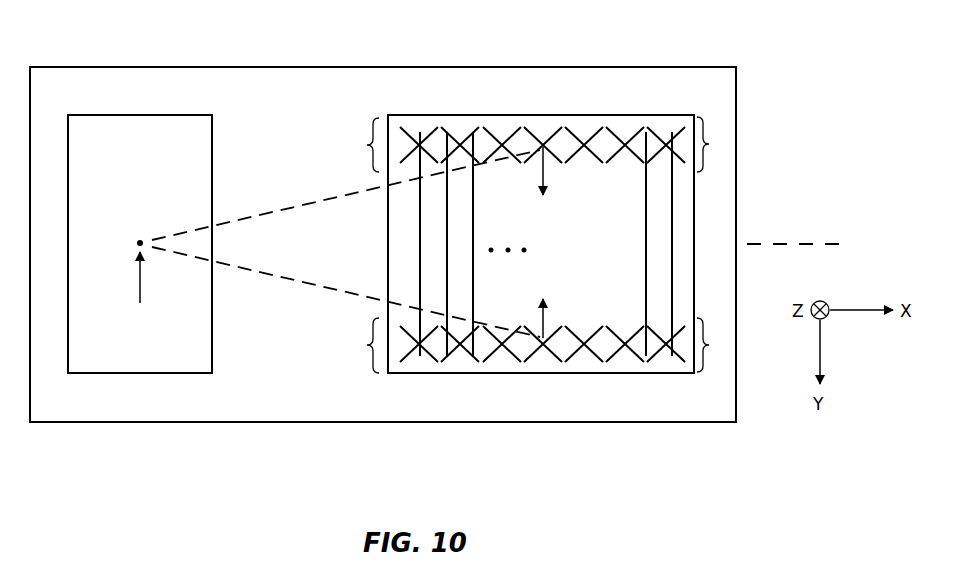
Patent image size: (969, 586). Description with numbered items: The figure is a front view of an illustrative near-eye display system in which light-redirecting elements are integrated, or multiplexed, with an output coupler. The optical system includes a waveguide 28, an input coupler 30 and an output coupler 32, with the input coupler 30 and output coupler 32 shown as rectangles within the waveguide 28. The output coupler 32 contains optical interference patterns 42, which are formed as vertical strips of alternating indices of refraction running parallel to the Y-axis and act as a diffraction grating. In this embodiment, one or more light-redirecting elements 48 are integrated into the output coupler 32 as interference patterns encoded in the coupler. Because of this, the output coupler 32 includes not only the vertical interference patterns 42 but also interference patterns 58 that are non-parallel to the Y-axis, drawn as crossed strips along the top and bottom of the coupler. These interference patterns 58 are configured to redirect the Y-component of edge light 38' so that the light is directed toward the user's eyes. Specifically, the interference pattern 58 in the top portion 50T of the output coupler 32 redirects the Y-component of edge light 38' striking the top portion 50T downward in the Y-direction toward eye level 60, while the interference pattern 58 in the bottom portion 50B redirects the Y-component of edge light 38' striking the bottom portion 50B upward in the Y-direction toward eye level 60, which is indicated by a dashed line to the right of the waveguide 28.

The waveguide 28 is at (660, 67).
The input coupler 30 is at (128, 113).
The output coupler 32 is at (503, 114).
The edge light 38' is at (371, 242).
The optical interference patterns 42 is at (674, 225).
The light-redirecting elements 48 is at (709, 144).
The top portion 50T is at (353, 145).
The bottom portion 50B is at (353, 345).
The interference patterns 58 is at (557, 135).
The eye level 60 is at (836, 241).